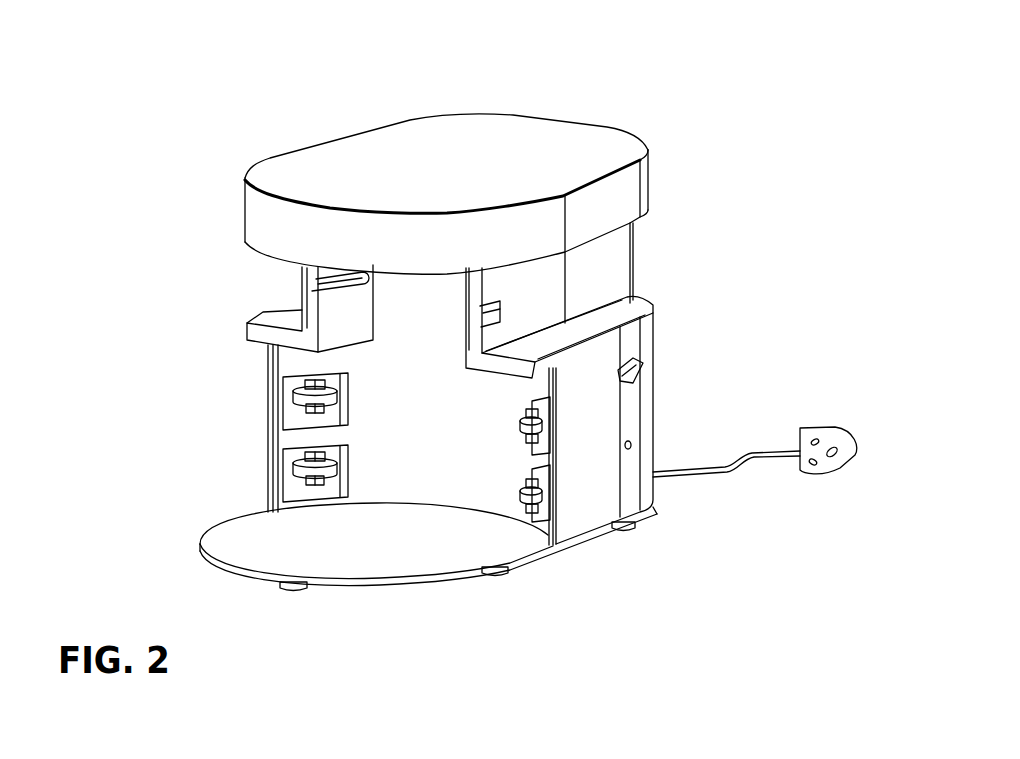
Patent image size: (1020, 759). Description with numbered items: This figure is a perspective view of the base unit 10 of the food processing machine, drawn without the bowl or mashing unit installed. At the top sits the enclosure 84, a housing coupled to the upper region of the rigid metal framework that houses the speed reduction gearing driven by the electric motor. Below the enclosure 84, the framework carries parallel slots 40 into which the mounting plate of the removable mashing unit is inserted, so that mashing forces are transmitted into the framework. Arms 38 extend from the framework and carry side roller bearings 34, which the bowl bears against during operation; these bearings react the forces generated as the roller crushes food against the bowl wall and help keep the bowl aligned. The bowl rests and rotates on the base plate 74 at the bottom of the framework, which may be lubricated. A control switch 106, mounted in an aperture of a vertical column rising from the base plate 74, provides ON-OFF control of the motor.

The base unit 10 is at (437, 64).
The enclosure 84 is at (546, 156).
The parallel slots 40 is at (466, 318).
The control switch 106 is at (645, 366).
The arms 38 is at (347, 446).
The side roller bearings 34 is at (332, 406).
The base plate 74 is at (331, 548).